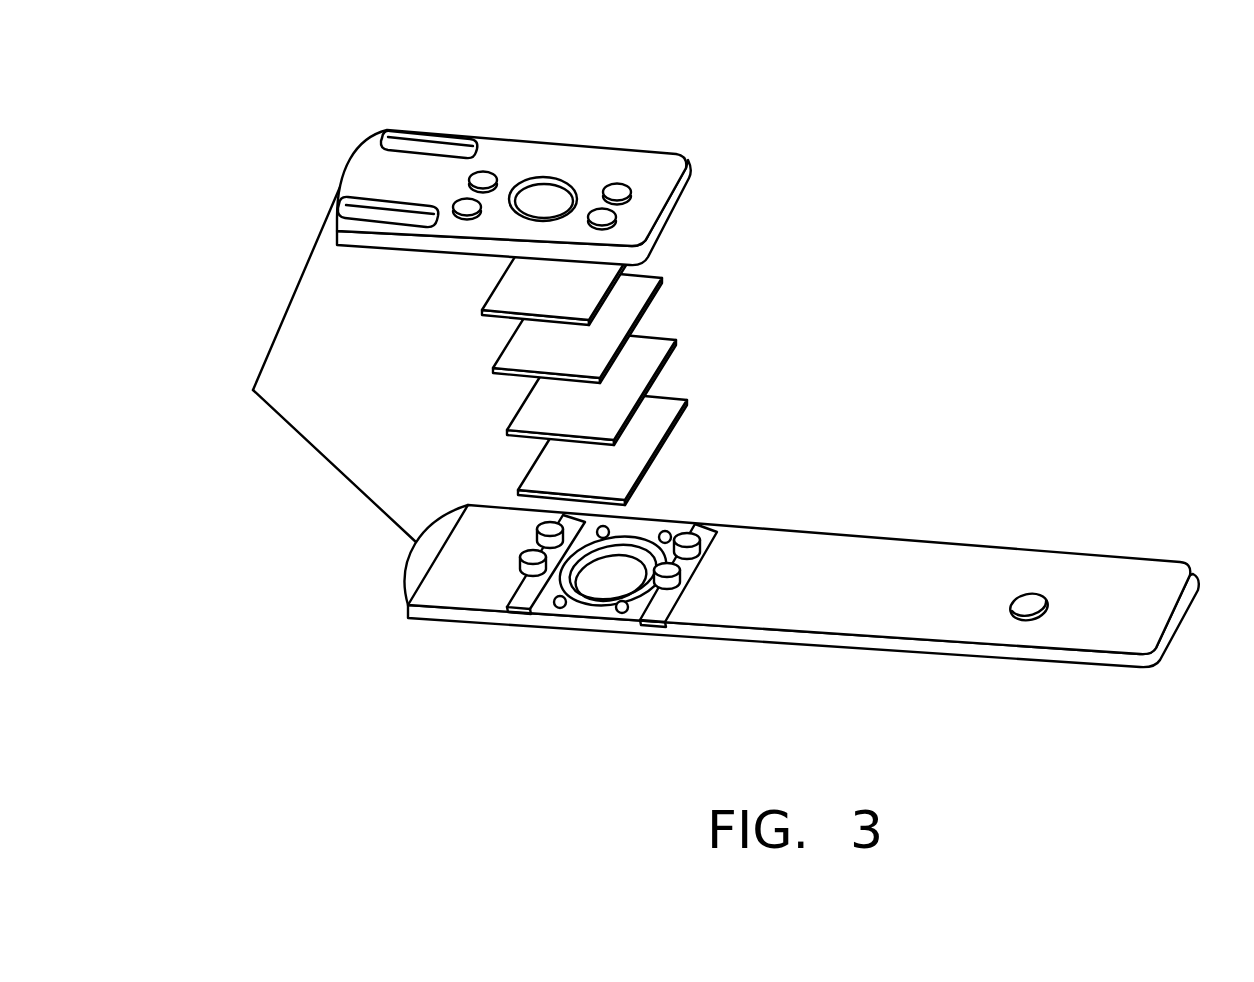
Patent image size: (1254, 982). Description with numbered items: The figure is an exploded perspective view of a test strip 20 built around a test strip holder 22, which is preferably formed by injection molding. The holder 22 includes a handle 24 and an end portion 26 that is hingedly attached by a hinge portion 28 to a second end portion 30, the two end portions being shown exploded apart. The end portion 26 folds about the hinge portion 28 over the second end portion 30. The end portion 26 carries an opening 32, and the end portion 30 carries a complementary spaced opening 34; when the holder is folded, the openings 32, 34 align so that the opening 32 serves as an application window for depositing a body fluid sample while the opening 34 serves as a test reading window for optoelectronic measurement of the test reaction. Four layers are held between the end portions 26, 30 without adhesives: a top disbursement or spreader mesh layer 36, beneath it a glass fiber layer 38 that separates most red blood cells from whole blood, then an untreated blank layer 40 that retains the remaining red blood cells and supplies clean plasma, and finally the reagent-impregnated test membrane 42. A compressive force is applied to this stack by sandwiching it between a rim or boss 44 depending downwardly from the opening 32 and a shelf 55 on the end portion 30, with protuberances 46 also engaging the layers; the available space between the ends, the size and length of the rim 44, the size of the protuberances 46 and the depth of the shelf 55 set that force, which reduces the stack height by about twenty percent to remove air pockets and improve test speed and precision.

The test strip 20 is at (872, 168).
The test strip holder 22 is at (795, 619).
The handle 24 is at (987, 573).
The end portion 26 is at (545, 153).
The hinge portion 28 is at (253, 390).
The second end portion 30 is at (448, 587).
The opening 32 is at (567, 200).
The opening 34 is at (600, 575).
The spreader layer 36 is at (630, 267).
The layer 38 is at (652, 308).
The blank layer 40 is at (664, 362).
The test membrane 42 is at (673, 424).
The rim 44 is at (533, 193).
The protuberances 46 is at (620, 610).
The shelf 55 is at (600, 598).